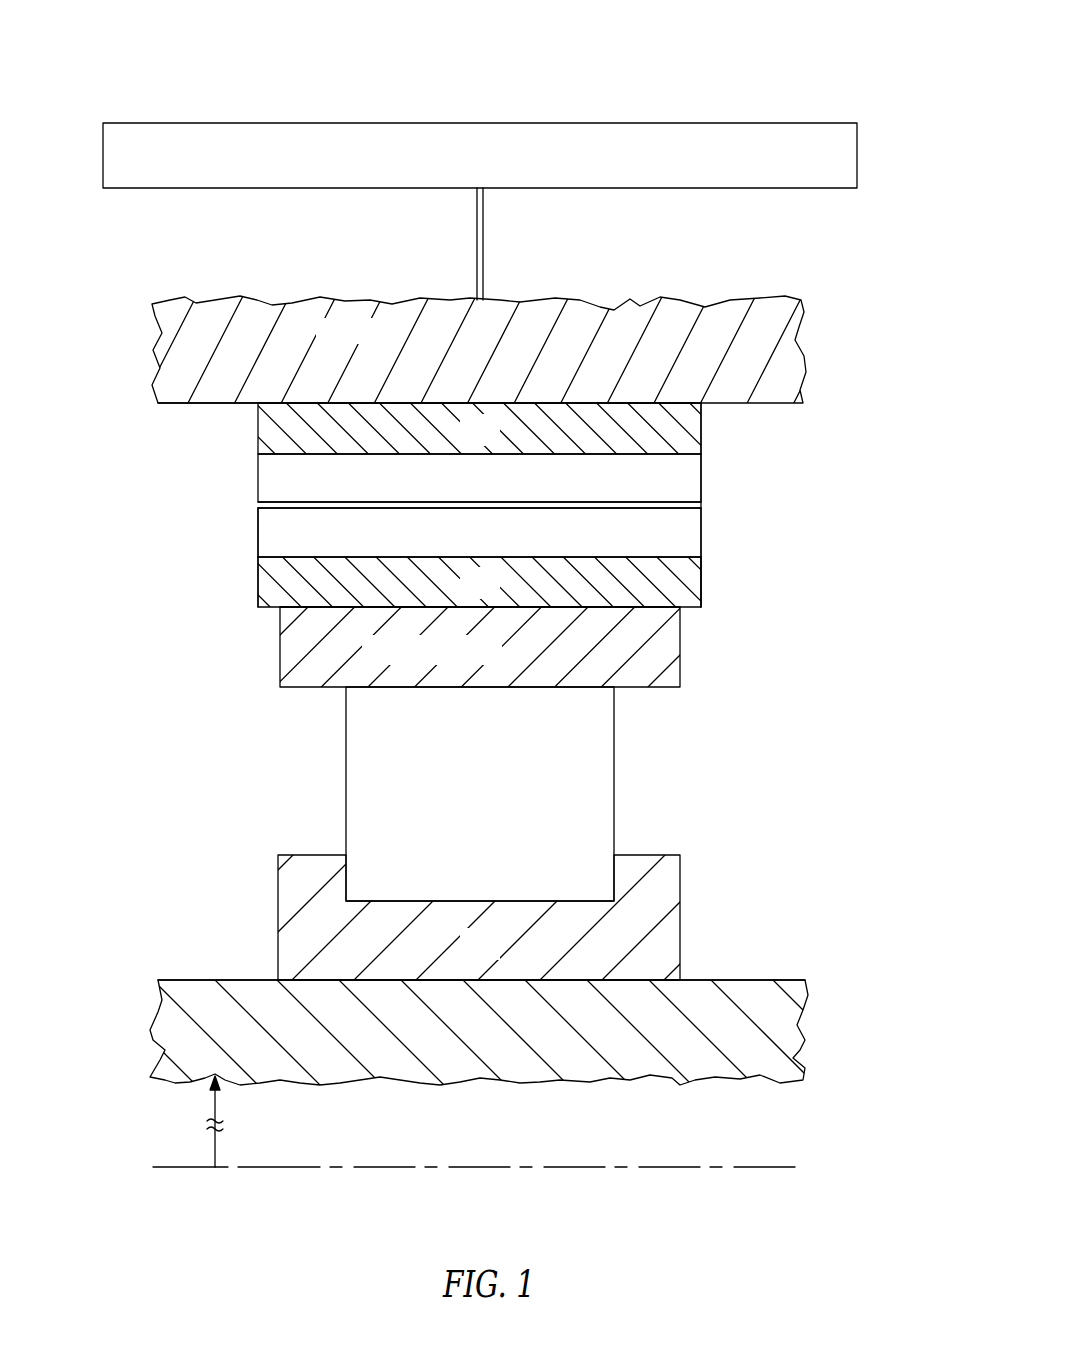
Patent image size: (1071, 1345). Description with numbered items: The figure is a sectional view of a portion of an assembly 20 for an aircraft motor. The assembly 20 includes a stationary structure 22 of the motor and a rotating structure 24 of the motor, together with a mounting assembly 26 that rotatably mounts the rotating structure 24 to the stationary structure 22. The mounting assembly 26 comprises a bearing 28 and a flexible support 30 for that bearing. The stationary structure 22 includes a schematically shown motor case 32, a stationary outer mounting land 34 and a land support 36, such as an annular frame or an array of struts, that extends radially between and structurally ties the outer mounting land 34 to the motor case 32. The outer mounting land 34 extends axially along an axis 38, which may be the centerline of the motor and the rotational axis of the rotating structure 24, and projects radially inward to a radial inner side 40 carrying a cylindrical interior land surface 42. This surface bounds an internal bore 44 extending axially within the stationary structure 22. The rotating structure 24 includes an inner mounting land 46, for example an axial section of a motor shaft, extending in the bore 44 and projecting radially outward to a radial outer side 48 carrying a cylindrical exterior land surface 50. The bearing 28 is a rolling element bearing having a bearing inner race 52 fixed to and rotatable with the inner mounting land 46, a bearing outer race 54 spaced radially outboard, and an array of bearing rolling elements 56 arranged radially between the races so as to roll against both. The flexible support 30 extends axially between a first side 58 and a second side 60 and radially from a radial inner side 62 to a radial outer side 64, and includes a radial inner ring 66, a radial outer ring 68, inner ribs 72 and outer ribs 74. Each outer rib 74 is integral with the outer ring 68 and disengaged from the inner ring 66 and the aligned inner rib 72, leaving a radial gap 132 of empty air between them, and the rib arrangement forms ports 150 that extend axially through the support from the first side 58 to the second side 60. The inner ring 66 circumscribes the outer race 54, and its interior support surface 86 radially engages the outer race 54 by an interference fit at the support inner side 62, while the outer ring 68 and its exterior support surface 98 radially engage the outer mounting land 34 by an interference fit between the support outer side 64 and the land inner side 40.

The assembly 20 is at (848, 55).
The stationary structure 22 is at (104, 98).
The rotating structure 24 is at (126, 1048).
The mounting assembly 26 is at (846, 640).
The bearing 28 is at (765, 758).
The flexible support 30 is at (733, 500).
The motor case 32 is at (857, 155).
The stationary outer mounting land 34 is at (800, 338).
The land support 36 is at (483, 237).
The axis 38 is at (153, 1170).
The radial inner side 40 is at (158, 425).
The interior land surface 42 is at (175, 403).
The internal bore 44 is at (188, 806).
The inner mounting land 46 is at (800, 1048).
The radial outer side 48 is at (474, 933).
The exterior land surface 50 is at (178, 980).
The bearing inner race 52 is at (493, 956).
The bearing outer race 54 is at (493, 661).
The bearing rolling elements 56 is at (493, 806).
The first side 58 is at (701, 580).
The second side 60 is at (258, 587).
The radial inner side 62 is at (480, 635).
The radial outer side 64 is at (479, 359).
The radial inner ring 66 is at (493, 594).
The radial outer ring 68 is at (493, 441).
The inner ribs 72 is at (701, 527).
The outer ribs 74 is at (701, 473).
The interior support surface 86 is at (312, 610).
The exterior support surface 98 is at (340, 402).
The radial gap 132 is at (243, 505).
The ports 150 is at (292, 538).